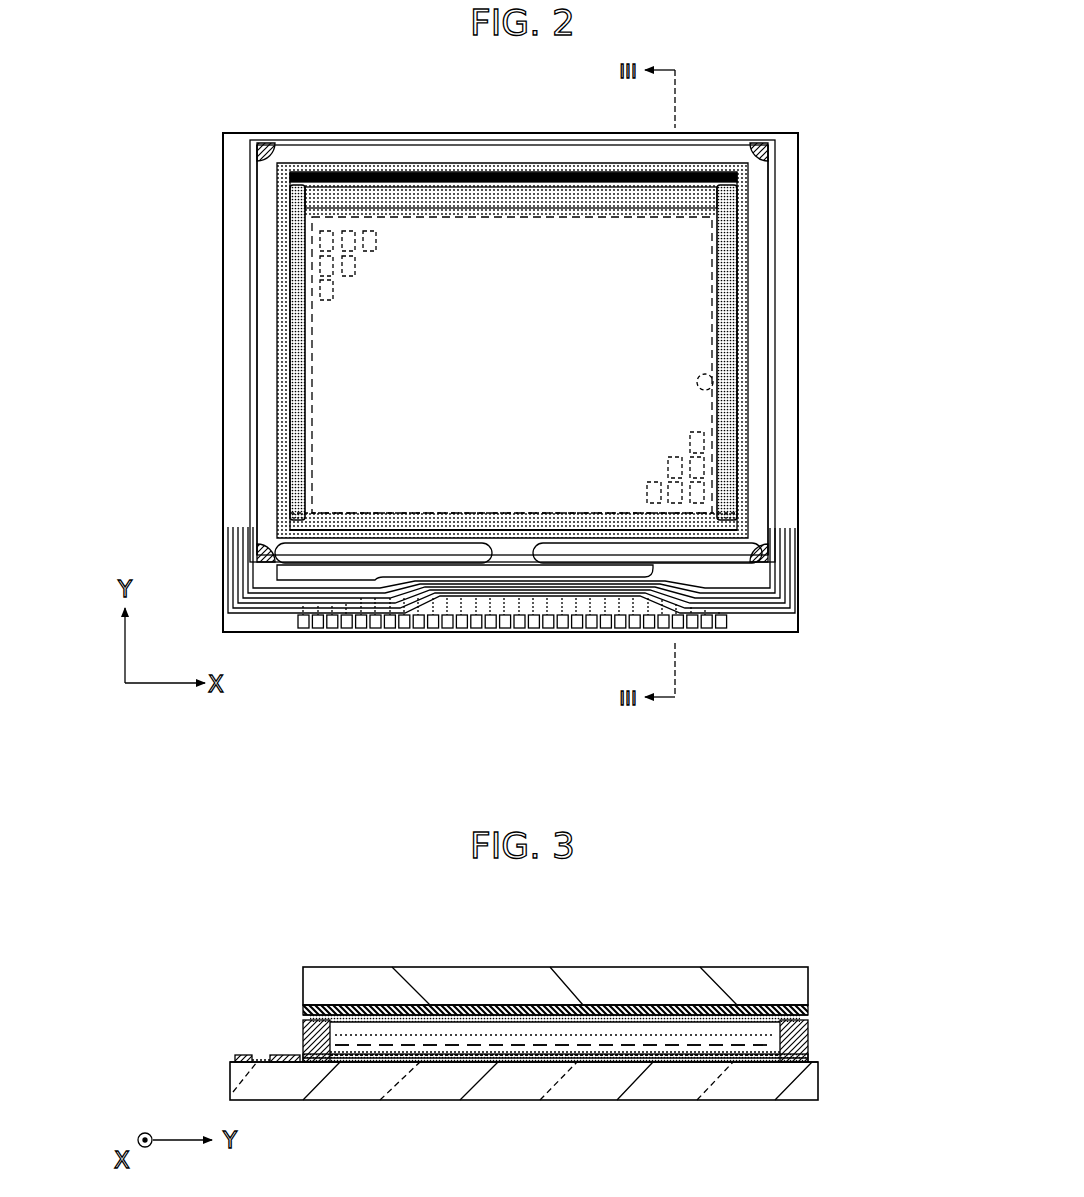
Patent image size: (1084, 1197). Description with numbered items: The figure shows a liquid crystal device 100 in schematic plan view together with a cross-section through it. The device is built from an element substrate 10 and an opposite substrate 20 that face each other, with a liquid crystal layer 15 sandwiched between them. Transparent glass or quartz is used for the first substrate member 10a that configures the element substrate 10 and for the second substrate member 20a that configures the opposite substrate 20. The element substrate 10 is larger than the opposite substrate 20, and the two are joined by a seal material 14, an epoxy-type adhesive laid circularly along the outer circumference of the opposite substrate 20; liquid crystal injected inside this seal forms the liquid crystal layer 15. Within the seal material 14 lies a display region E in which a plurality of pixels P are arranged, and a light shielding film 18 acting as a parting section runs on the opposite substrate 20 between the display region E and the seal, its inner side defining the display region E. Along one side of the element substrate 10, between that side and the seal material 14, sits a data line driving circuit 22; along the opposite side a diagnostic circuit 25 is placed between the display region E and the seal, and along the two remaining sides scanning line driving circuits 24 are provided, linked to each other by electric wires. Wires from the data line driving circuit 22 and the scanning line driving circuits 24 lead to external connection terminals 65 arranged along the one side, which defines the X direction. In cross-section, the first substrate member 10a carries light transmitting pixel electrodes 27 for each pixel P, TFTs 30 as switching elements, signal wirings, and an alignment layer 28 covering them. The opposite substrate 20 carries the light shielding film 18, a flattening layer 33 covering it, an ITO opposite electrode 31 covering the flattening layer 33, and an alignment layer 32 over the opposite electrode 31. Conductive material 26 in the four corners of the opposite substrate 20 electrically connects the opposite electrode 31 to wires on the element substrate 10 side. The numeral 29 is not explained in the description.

In FIG. 2, the liquid crystal device 100 is at (792, 100).
In FIG. 3, the liquid crystal device 100 is at (708, 886).
In FIG. 3, the element substrate 10 is at (812, 1102).
In FIG. 2, the first substrate member 10a is at (333, 131).
In FIG. 3, the first substrate member 10a is at (815, 1077).
In FIG. 3, the opposite substrate 20 is at (800, 967).
In FIG. 2, the second substrate member 20a is at (427, 140).
In FIG. 3, the second substrate member 20a is at (810, 983).
In FIG. 2, the seal material 14 is at (758, 297).
In FIG. 3, the seal material 14 is at (810, 1022).
In FIG. 3, the liquid crystal layer 15 is at (810, 1050).
In FIG. 2, the light shielding film 18 is at (394, 525).
In FIG. 3, the light shielding film 18 is at (340, 1008).
In FIG. 2, the data line driving circuit 22 is at (288, 578).
In FIG. 3, the data line driving circuit 22 is at (285, 1055).
In FIG. 2, the scanning line driving circuit 24 is at (307, 330).
In FIG. 2, the diagnostic circuit 25 is at (555, 188).
In FIG. 3, the diagnostic circuit 25 is at (748, 1062).
In FIG. 2, the conductive material 26 is at (255, 152).
In FIG. 3, the pixel electrode 27 is at (417, 1062).
In FIG. 3, the alignment layer 28 is at (540, 1045).
In FIG. 2, the frame region 29 is at (477, 163).
In FIG. 3, the frame region 29 is at (768, 1060).
In FIG. 3, the TFT 30 is at (555, 1109).
In FIG. 3, the opposite electrode 31 is at (690, 1022).
In FIG. 3, the alignment layer 32 is at (598, 1040).
In FIG. 3, the flattening layer 33 is at (475, 1010).
In FIG. 2, the external connection terminal 65 is at (388, 630).
In FIG. 3, the external connection terminal 65 is at (243, 1055).
In FIG. 2, the display region E is at (713, 380).
In FIG. 2, the pixel P is at (378, 238).